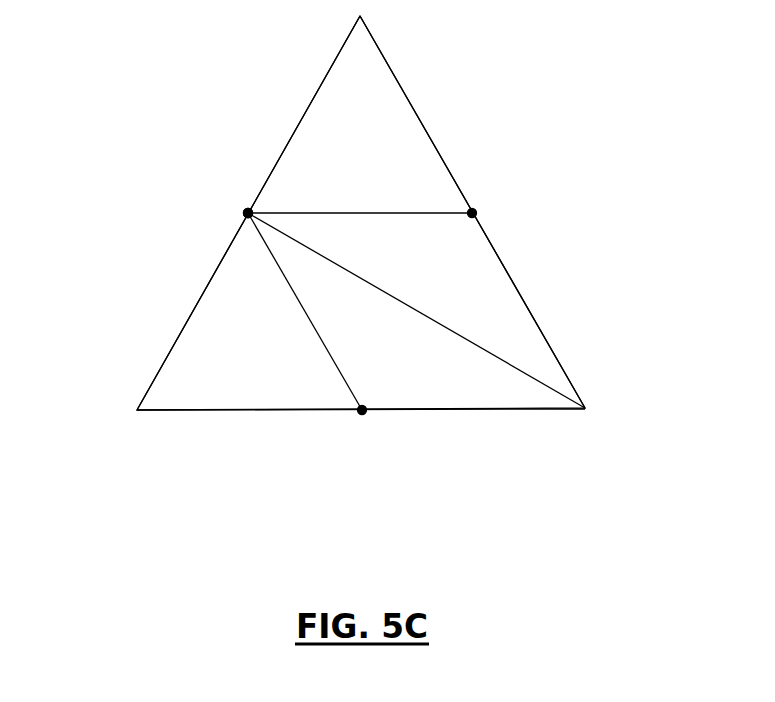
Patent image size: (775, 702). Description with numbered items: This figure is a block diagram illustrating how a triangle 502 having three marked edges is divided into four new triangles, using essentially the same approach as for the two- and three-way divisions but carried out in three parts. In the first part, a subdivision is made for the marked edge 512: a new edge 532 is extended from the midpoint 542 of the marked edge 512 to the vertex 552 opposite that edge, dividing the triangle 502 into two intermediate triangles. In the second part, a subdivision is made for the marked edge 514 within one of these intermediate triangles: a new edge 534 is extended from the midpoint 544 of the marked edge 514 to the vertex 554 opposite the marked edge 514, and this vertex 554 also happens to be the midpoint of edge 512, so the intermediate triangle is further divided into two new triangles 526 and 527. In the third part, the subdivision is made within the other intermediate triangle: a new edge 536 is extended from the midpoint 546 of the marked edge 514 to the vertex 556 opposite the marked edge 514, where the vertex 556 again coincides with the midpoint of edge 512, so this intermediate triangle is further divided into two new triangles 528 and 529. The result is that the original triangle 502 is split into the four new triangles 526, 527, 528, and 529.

The triangle 502 is at (684, 208).
The marked edge 512 is at (305, 110).
The marked edge 514 is at (518, 287).
The new triangle 526 is at (340, 166).
The new triangle 527 is at (410, 276).
The new triangle 528 is at (363, 358).
The new triangle 529 is at (224, 342).
The new edge 532 is at (543, 381).
The new edge 534 is at (438, 210).
The new edge 536 is at (335, 368).
The midpoint 542 is at (245, 213).
The midpoint 544 is at (476, 213).
The midpoint 546 is at (362, 416).
The vertex 552 is at (590, 410).
The vertex 554 is at (245, 214).
The vertex 556 is at (245, 216).